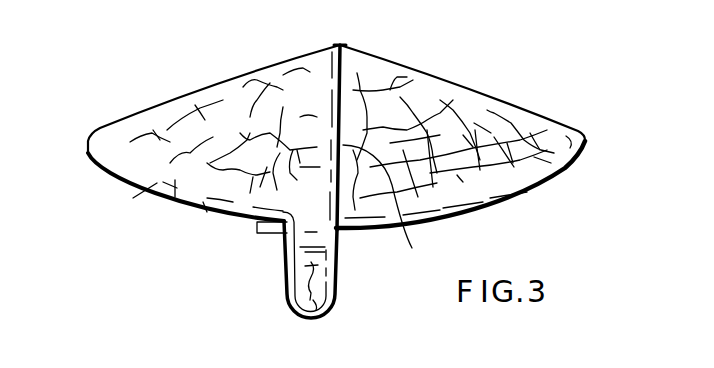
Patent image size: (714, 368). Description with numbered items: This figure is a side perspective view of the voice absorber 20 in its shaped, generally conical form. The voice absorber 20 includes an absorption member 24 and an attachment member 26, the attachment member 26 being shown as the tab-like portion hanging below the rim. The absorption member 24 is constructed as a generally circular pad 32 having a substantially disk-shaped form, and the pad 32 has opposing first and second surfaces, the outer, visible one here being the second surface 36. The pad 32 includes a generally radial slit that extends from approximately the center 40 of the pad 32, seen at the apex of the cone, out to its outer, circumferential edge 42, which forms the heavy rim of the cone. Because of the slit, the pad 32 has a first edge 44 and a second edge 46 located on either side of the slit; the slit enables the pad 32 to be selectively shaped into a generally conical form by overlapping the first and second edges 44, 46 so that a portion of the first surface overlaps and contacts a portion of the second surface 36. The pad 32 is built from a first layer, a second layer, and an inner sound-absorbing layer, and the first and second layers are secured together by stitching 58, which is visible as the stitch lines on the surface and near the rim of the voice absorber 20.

The voice absorber 20 is at (108, 86).
The absorption member 24 is at (500, 96).
The attachment member 26 is at (345, 284).
The pad 32 is at (155, 165).
The second surface 36 is at (274, 100).
The center 40 is at (347, 43).
The outer circumferential edge 42 is at (583, 160).
The first edge 44 is at (257, 228).
The second edge 46 is at (396, 205).
The stitching 58 is at (538, 182).